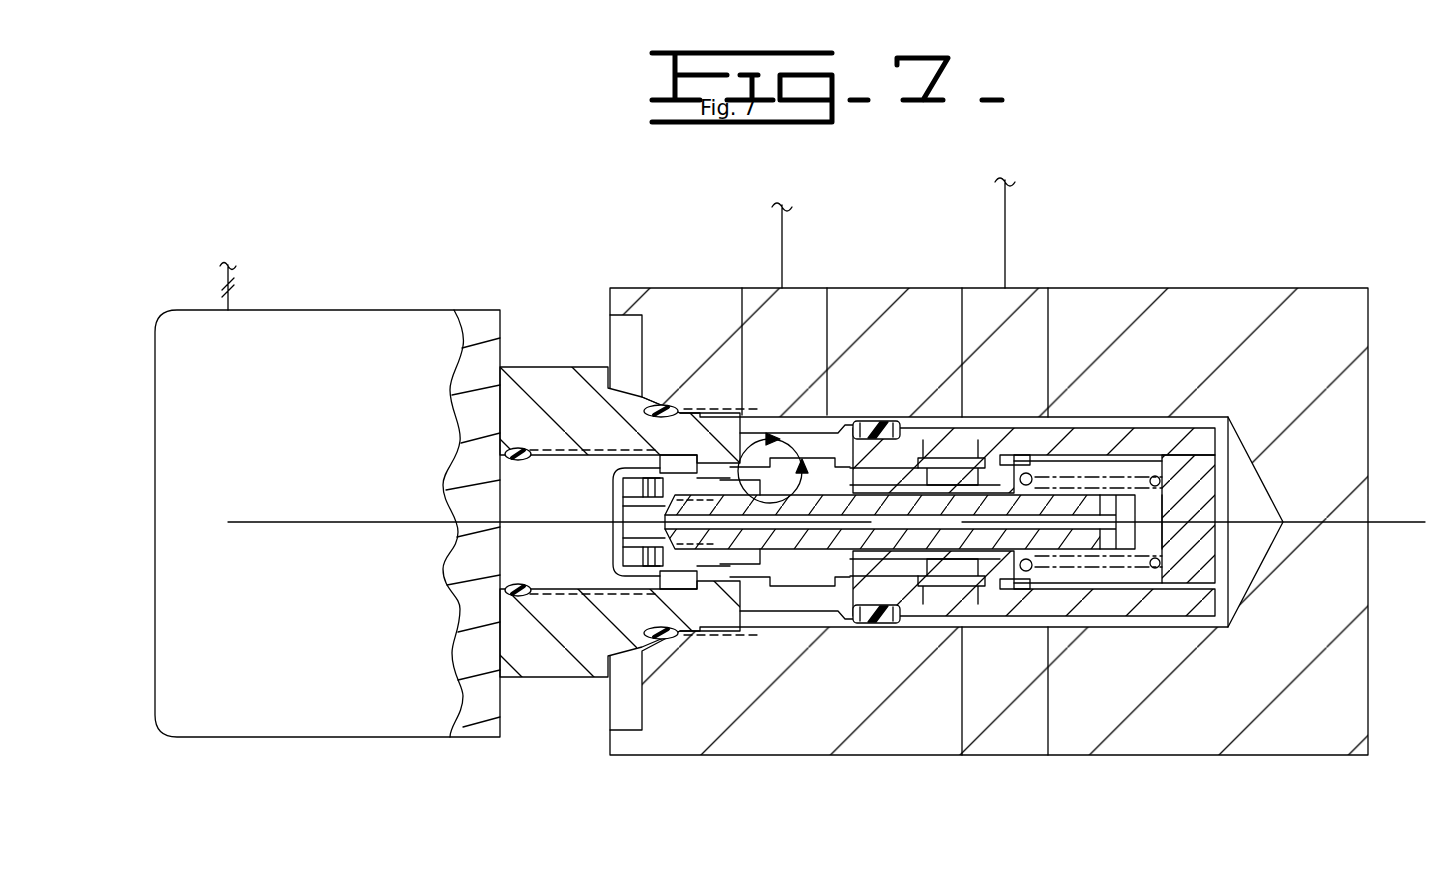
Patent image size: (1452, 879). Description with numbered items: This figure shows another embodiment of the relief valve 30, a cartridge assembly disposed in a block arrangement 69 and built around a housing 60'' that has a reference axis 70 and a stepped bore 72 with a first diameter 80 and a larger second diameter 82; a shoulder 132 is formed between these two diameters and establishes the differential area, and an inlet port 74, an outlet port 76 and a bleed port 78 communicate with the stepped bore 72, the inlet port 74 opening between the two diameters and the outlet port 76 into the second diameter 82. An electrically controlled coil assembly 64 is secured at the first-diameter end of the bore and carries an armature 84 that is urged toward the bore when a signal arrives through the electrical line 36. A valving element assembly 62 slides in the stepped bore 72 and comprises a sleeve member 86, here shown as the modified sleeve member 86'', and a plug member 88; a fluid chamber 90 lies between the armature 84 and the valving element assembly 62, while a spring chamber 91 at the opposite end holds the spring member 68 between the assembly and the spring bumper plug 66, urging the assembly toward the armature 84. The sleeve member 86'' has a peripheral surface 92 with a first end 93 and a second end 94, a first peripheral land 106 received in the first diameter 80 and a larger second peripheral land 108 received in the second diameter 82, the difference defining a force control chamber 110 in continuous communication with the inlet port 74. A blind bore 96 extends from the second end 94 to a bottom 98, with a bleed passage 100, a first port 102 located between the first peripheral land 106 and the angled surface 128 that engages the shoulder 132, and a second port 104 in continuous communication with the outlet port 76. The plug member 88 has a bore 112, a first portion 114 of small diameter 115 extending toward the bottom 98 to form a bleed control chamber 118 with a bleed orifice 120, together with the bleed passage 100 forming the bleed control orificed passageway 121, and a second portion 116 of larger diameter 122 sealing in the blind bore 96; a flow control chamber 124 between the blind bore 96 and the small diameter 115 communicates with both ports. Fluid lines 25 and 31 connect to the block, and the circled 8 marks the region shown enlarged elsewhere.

The section view indicator 8 is at (773, 467).
The first fluid line 25 is at (782, 222).
The relief valve 30 is at (464, 242).
The second fluid line 31 is at (1005, 204).
The electrical line 36 is at (228, 296).
The housing 60'' is at (610, 477).
The valving element assembly 62 is at (855, 598).
The electrically controlled coil assembly 64 is at (432, 310).
The spring bumper plug 66 is at (1177, 501).
The spring member 68 is at (1210, 445).
The block arrangement 69 is at (1304, 342).
The reference axis 70 is at (320, 522).
The stepped bore 72 is at (790, 560).
The inlet port 74 is at (808, 444).
The outlet port 76 is at (985, 440).
The bleed port 78 is at (1090, 455).
The first diameter 80 is at (613, 470).
The second diameter 82 is at (862, 420).
The armature 84 is at (469, 530).
The sleeve member 86 is at (765, 422).
The sleeve member 86'' is at (1055, 346).
The plug member 88 is at (1010, 445).
The fluid chamber 90 is at (572, 568).
The spring chamber 91 is at (1138, 470).
The peripheral surface 92 is at (873, 592).
The first end 93 is at (546, 680).
The second end 94 is at (1040, 592).
The blind bore 96 is at (940, 612).
The bottom 98 is at (622, 470).
The bleed passage 100 is at (658, 480).
The first port 102 is at (797, 436).
The second port 104 is at (935, 428).
The first peripheral land 106 is at (688, 613).
The second peripheral land 108 is at (885, 620).
The force control chamber 110 is at (714, 600).
The bore 112 is at (1125, 522).
The first portion 114 is at (680, 558).
The small diameter 115 is at (830, 570).
The second portion 116 is at (1020, 582).
The bleed control chamber 118 is at (615, 562).
The bleed orifice 120 is at (630, 502).
The bleed control orificed passageway 121 is at (633, 486).
The larger diameter 122 is at (1068, 445).
The flow control chamber 124 is at (788, 590).
The angled surface 128 is at (698, 452).
The shoulder 132 is at (762, 570).